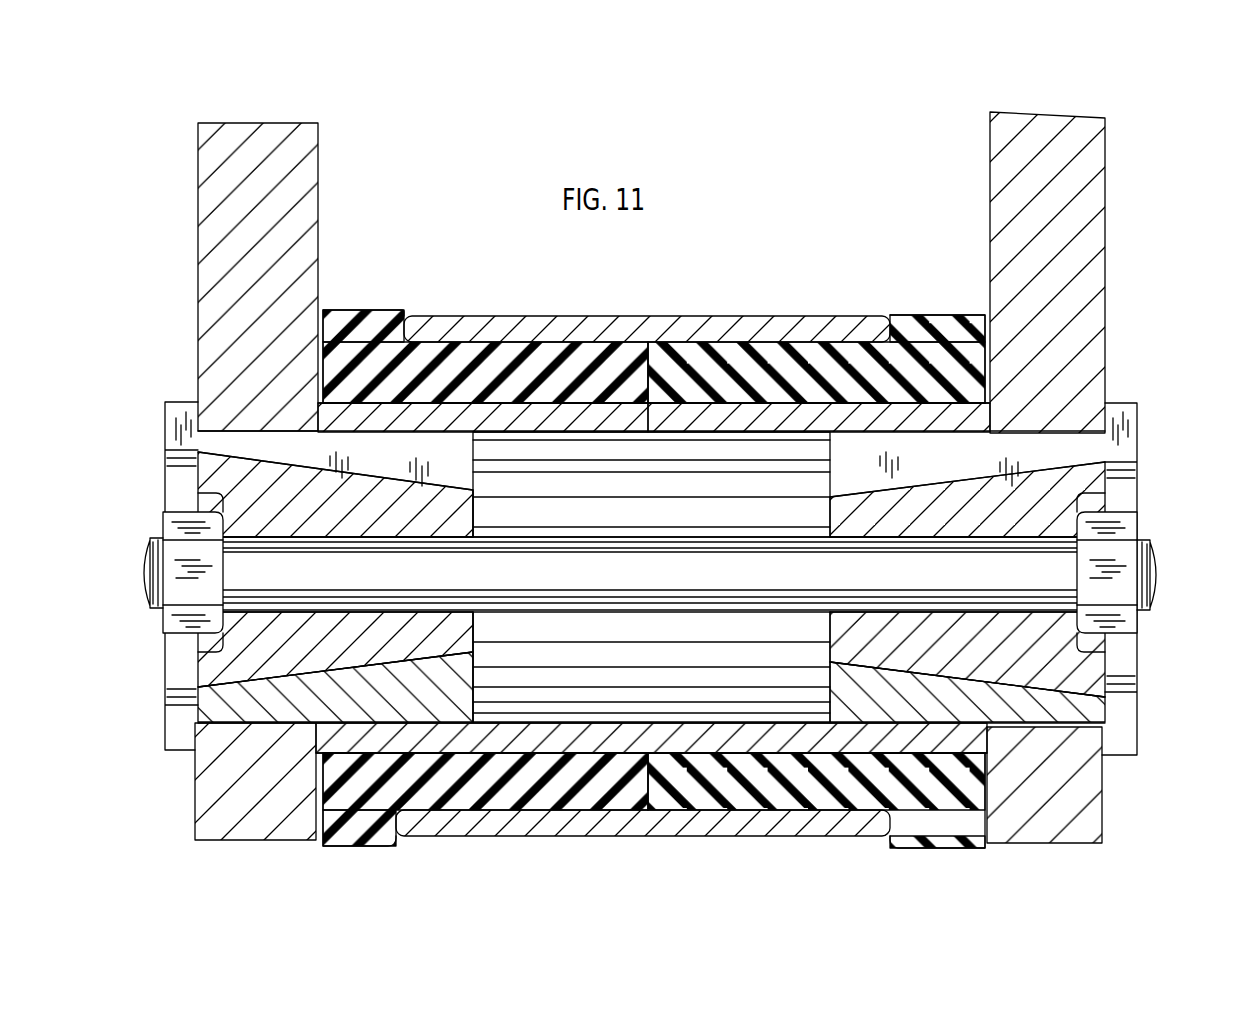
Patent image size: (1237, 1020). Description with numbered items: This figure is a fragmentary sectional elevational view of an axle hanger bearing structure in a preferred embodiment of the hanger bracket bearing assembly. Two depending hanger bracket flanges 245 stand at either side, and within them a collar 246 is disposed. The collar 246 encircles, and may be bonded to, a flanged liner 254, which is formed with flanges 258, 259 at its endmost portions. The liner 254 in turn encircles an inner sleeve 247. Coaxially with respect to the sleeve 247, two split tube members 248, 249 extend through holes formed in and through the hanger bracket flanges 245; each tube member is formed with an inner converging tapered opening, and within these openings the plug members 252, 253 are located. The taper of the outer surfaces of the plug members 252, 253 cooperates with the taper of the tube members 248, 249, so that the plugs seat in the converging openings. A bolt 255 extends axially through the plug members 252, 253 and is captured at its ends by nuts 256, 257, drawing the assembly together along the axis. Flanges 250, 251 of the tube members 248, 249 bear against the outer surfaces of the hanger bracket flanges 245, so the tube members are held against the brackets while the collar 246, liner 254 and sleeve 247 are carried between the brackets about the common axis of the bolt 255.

The hanger bracket flanges 245 is at (1097, 312).
The collar 246 is at (718, 326).
The inner sleeve 247 is at (760, 431).
The split tube member 248 is at (1058, 440).
The split tube member 249 is at (240, 437).
The flange 250 is at (1127, 432).
The flange 251 is at (168, 413).
The plug member 252 is at (837, 630).
The plug member 253 is at (463, 514).
The flanged liner 254 is at (598, 795).
The bolt 255 is at (150, 603).
The nut 256 is at (170, 515).
The nut 257 is at (1112, 558).
The flange 258 is at (921, 326).
The flange 259 is at (384, 323).